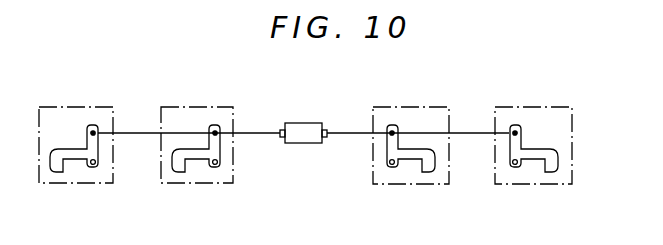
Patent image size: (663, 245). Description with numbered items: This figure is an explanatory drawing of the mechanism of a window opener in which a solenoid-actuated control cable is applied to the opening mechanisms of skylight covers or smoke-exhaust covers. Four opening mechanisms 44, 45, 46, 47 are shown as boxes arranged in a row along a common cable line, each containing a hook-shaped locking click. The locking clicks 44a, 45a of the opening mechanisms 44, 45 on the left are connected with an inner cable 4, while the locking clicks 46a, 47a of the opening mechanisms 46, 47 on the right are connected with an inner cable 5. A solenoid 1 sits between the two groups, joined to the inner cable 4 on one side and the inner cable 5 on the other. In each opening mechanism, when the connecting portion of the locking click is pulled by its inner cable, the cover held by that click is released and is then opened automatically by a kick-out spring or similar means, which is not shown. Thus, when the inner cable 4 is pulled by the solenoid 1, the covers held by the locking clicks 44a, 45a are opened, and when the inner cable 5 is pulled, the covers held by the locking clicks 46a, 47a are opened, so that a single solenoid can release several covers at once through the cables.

The solenoid 1 is at (302, 140).
The inner cable 4 is at (262, 131).
The inner cable 5 is at (345, 131).
The opening mechanism 44 is at (70, 110).
The locking click 44a is at (75, 158).
The opening mechanism 45 is at (190, 110).
The locking click 45a is at (197, 158).
The opening mechanism 46 is at (423, 112).
The locking click 46a is at (413, 158).
The opening mechanism 47 is at (537, 112).
The locking click 47a is at (537, 158).